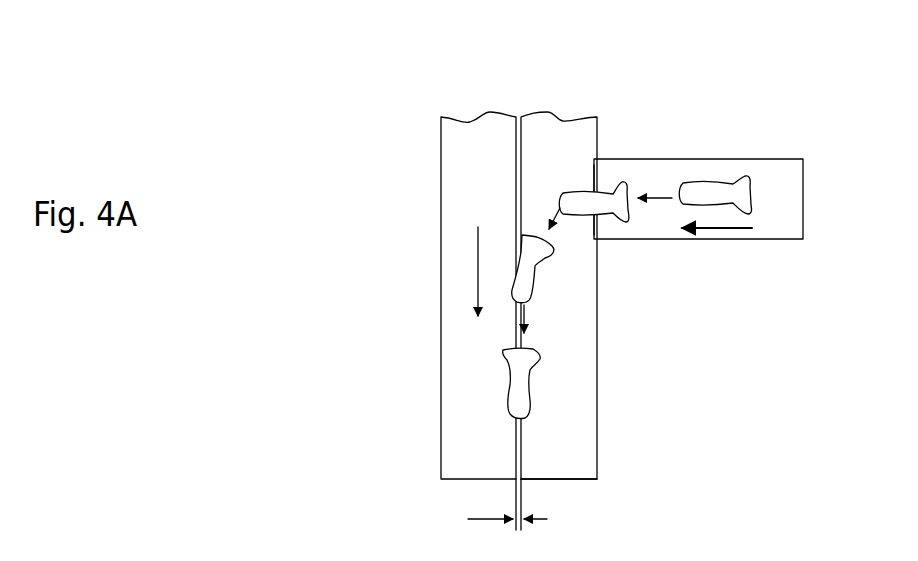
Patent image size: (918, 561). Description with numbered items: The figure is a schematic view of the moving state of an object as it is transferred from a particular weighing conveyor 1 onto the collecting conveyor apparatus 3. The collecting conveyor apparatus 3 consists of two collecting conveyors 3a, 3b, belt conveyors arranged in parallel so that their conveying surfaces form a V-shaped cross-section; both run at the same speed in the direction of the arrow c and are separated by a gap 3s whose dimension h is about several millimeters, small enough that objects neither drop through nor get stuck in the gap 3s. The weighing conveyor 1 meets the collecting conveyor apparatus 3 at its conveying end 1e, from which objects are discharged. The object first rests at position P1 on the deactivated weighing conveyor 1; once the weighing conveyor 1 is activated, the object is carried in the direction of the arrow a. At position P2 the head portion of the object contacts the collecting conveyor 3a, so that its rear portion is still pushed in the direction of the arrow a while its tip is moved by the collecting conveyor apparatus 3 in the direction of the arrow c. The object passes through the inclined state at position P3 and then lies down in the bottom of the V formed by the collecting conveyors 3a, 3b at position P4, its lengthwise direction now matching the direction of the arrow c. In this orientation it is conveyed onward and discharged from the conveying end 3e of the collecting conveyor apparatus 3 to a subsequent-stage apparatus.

The weighing conveyor 1 is at (779, 159).
The conveying end of weighing conveyor 1e is at (593, 178).
The collecting conveyor apparatus 3 is at (519, 239).
The collecting conveyor 3a is at (559, 260).
The collecting conveyor 3b is at (482, 136).
The gap 3s is at (510, 463).
The conveying end of collecting conveyor apparatus 3e is at (560, 480).
The dimension of gap h is at (507, 509).
The transporting direction of weighing conveyor a is at (723, 240).
The conveying direction of collecting conveyors c is at (478, 270).
The position P1 is at (748, 178).
The position P2 is at (620, 190).
The position P3 is at (532, 275).
The position P4 is at (522, 392).